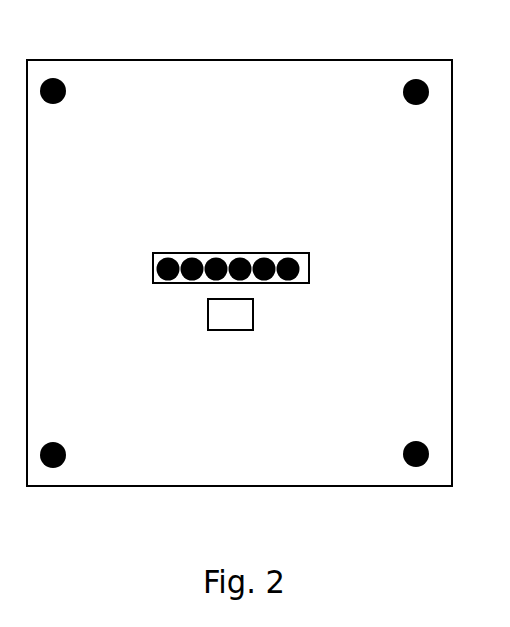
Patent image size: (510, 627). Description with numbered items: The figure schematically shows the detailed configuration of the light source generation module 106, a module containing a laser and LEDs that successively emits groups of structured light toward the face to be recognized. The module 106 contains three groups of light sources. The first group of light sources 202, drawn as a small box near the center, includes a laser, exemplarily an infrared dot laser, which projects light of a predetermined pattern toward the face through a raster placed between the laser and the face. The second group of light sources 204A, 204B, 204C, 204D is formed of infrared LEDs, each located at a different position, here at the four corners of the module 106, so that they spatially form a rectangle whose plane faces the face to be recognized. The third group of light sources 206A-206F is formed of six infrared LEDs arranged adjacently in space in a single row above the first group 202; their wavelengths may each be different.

The light source generation module 106 is at (345, 60).
The second group of light sources 204A is at (91, 91).
The second group of light sources 204B is at (380, 92).
The second group of light sources 204C is at (88, 455).
The second group of light sources 204D is at (378, 454).
The third group of light sources 206A-206F is at (293, 268).
The first group of light sources 202 is at (261, 314).